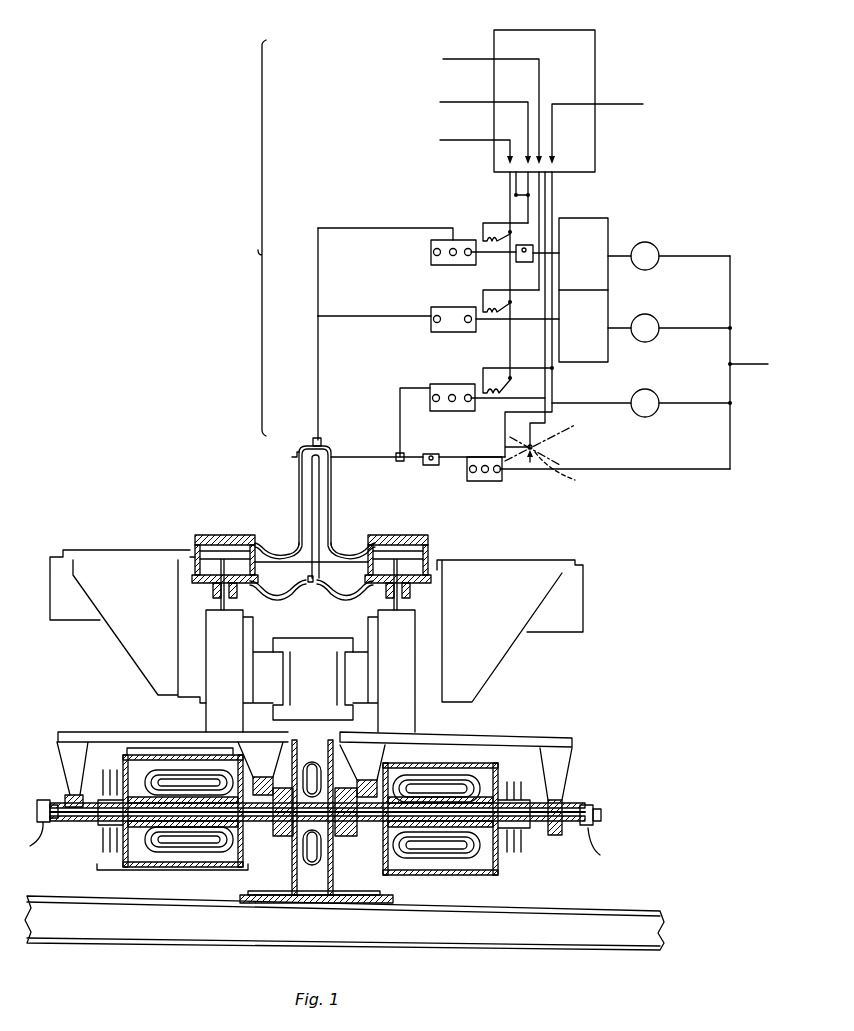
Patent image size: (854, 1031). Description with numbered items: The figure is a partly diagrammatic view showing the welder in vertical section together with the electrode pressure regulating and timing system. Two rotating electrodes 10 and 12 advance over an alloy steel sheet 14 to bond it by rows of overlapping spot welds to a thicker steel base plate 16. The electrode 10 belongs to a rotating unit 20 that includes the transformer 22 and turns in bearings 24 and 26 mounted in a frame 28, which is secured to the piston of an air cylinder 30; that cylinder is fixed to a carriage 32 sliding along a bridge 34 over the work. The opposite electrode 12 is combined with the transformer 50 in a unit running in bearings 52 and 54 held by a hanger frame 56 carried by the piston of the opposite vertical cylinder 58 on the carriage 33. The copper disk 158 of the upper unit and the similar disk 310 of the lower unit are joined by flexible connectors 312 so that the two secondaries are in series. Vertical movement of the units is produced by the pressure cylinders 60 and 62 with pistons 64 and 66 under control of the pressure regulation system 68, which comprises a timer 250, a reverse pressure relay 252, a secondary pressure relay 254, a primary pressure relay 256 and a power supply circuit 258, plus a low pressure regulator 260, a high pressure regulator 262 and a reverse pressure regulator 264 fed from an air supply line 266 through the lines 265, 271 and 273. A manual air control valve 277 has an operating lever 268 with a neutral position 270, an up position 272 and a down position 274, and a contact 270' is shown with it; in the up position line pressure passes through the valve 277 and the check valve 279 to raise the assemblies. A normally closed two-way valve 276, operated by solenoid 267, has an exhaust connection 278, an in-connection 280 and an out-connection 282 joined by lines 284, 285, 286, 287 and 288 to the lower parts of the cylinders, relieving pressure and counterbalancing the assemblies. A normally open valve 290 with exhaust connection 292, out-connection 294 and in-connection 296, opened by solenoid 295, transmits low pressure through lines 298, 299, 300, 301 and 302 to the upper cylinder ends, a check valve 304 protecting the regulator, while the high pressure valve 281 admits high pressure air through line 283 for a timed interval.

The rotating electrode 10 is at (292, 884).
The rotating electrode 12 is at (333, 885).
The alloy steel sheet 14 is at (378, 894).
The steel base plate 16 is at (396, 905).
The rotating unit 20 is at (187, 870).
The transformer 22 is at (180, 760).
The bearing 24 is at (76, 800).
The bearing 26 is at (265, 789).
The frame 28 is at (108, 732).
The air cylinder 30 is at (232, 677).
The carriage 32 is at (128, 635).
The carriage 33 is at (494, 650).
The bridge 34 is at (310, 645).
The transformer 50 is at (437, 874).
The bearing 52 is at (360, 790).
The bearing 54 is at (568, 792).
The hanger frame 56 is at (510, 734).
The vertical cylinder 58 is at (407, 671).
The pressure cylinder 60 is at (223, 535).
The pressure cylinder 62 is at (409, 541).
The piston 64 is at (238, 552).
The piston 66 is at (440, 553).
The pressure regulation system 68 is at (258, 252).
The copper disk 158 is at (303, 729).
The timer 250 is at (597, 60).
The reverse pressure relay 252 is at (615, 105).
The secondary pressure relay 254 is at (461, 58).
The primary pressure relay 256 is at (463, 97).
The power supply circuit 258 is at (463, 135).
The low pressure compressed air regulator 260 is at (658, 246).
The high pressure compressed air regulator 262 is at (656, 319).
The reverse pressure air regulator 264 is at (649, 391).
The line 265 is at (568, 403).
The air supply line 266 is at (761, 359).
The solenoid 267 is at (502, 392).
The operating lever 268 is at (531, 470).
The neutral position 270 is at (560, 451).
The switch contact 270' is at (508, 498).
The line component 271 is at (730, 424).
The up position 272 is at (555, 440).
The line component 273 is at (654, 465).
The down position 274 is at (572, 475).
The two-way valve 276 is at (437, 384).
The manual air control valve 277 is at (475, 481).
The exhaust connection 278 is at (435, 402).
The check valve 279 is at (431, 466).
The in-connection 280 is at (471, 401).
The high pressure valve 281 is at (446, 330).
The out-connection 282 is at (452, 402).
The compressed air line 283 is at (359, 318).
The line 284 is at (400, 418).
The compressed air line 285 is at (499, 319).
The line 286 is at (316, 520).
The line 287 is at (344, 594).
The line 288 is at (277, 594).
The normally open valve 290 is at (431, 246).
The exhaust connection 292 is at (434, 256).
The out-connection 294 is at (452, 256).
The solenoid 295 is at (486, 240).
The in-connection 296 is at (467, 256).
The line 298 is at (373, 228).
The line 299 is at (318, 268).
The compressed air line 300 is at (318, 372).
The compressed air line 301 is at (294, 450).
The compressed air line 302 is at (331, 531).
The check valve 304 is at (524, 263).
The disk 310 is at (341, 729).
The flexible connectors 312 is at (317, 802).